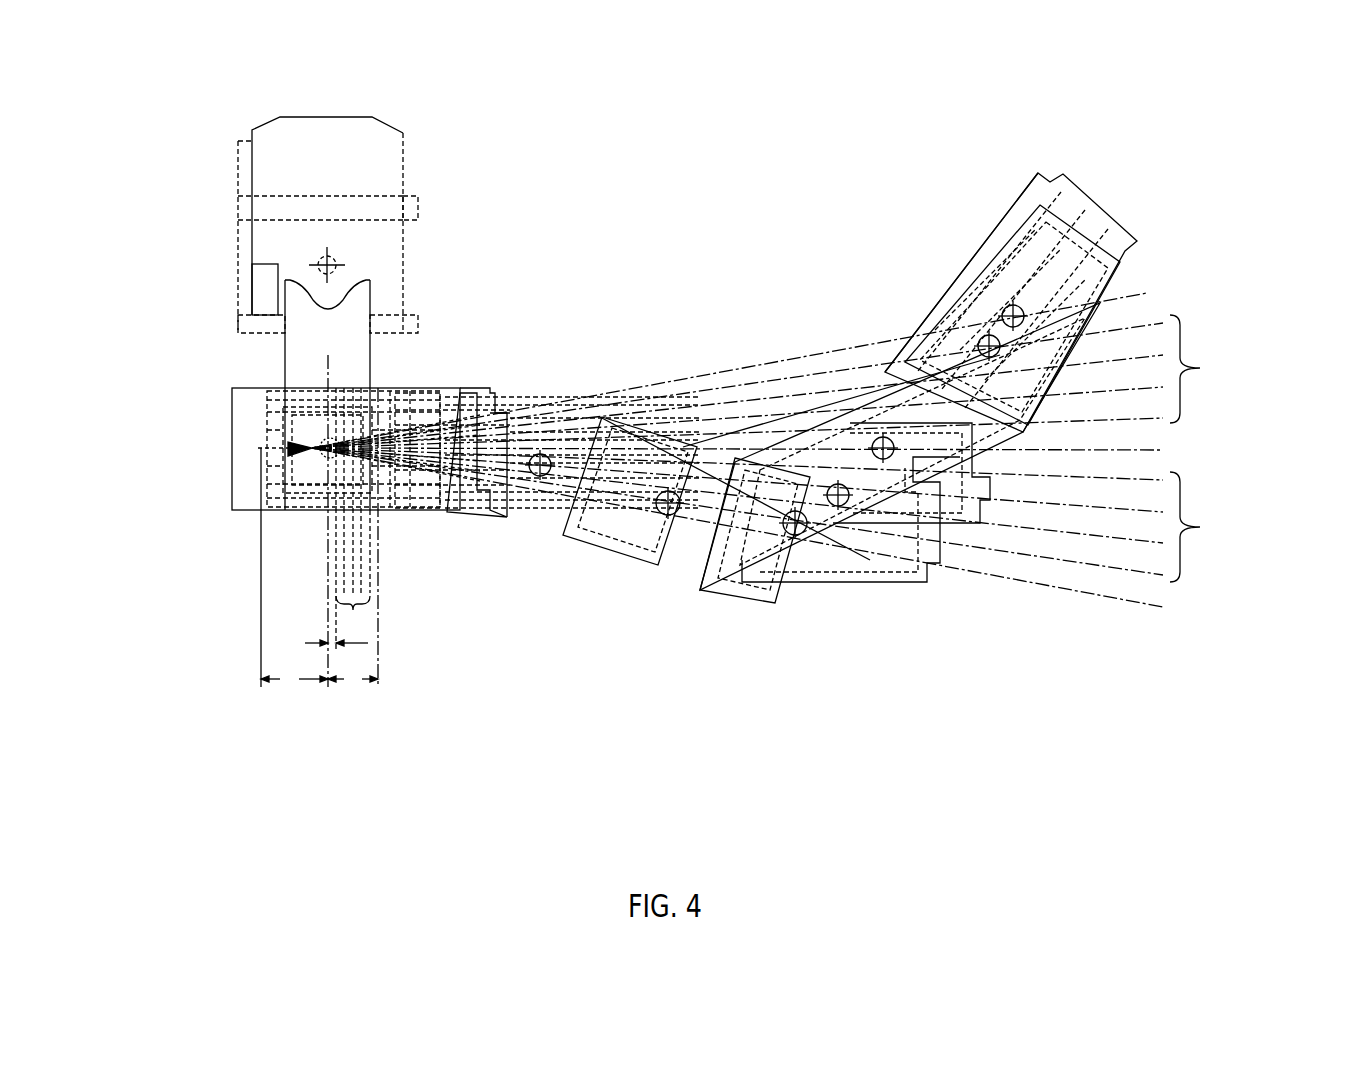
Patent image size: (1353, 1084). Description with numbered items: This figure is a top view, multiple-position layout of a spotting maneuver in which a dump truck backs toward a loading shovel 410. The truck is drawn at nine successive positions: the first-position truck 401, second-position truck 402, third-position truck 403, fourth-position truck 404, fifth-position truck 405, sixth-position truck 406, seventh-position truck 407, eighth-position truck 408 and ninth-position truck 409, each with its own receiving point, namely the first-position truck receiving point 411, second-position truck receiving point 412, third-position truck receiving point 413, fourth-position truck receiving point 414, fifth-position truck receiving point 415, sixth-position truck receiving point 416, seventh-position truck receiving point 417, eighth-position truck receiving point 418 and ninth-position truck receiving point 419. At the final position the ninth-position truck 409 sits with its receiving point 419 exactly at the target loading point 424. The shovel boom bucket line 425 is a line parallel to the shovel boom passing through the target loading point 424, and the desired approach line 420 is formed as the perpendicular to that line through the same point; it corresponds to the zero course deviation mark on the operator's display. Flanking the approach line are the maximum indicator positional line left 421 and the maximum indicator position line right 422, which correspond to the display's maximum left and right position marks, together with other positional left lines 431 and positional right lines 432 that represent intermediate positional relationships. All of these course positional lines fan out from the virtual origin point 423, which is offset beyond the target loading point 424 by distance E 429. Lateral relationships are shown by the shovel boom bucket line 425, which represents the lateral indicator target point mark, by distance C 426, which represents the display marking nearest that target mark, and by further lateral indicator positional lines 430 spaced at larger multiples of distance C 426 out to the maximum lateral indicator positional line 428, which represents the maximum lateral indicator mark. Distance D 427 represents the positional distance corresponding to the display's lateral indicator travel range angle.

The position 1 truck 401 is at (1115, 215).
The position 2 truck 402 is at (1140, 288).
The position 3 truck 403 is at (1027, 424).
The position 4 truck 404 is at (985, 493).
The position 5 truck 405 is at (928, 590).
The position 6 truck 406 is at (775, 605).
The position 7 truck 407 is at (560, 523).
The position 8 truck 408 is at (478, 515).
The position 9 truck 409 is at (243, 505).
The loading shovel 410 is at (265, 148).
The position 1 truck receiving point 411 is at (1006, 306).
The position 2 truck receiving point 412 is at (982, 335).
The position 3 truck receiving point 413 is at (878, 438).
The position 4 truck receiving point 414 is at (835, 484).
The position 5 truck receiving point 415 is at (790, 511).
The position 6 truck receiving point 416 is at (662, 491).
The position 7 truck receiving point 417 is at (538, 454).
The position 8 truck receiving point 418 is at (380, 440).
The position 9 truck receiving point 419 is at (318, 440).
The desired approach line 420 is at (1142, 444).
The maximum indicator positional line left 421 is at (1150, 300).
The maximum indicator position line right 422 is at (1143, 601).
The virtual origin point 423 is at (255, 445).
The target loading point 424 is at (300, 430).
The shovel boom bucket line 425 is at (326, 560).
The distance C 426 is at (290, 640).
The distance D 427 is at (352, 692).
The maximum lateral indicator positional line 428 is at (380, 583).
The distance E 429 is at (296, 692).
The lateral indicator positional lines 430 is at (354, 612).
The positional left lines 431 is at (1210, 368).
The positional right lines 432 is at (1210, 527).